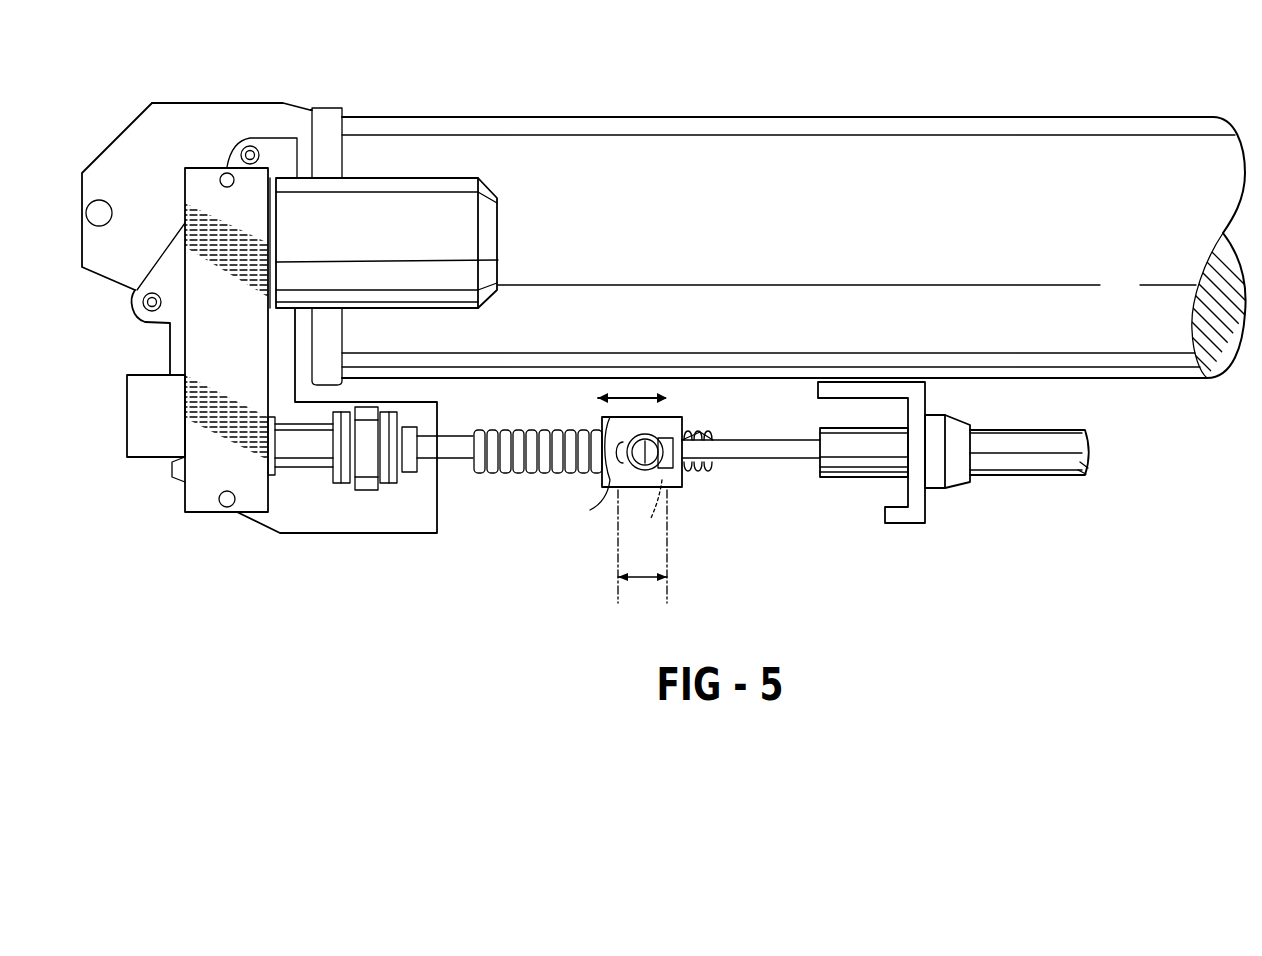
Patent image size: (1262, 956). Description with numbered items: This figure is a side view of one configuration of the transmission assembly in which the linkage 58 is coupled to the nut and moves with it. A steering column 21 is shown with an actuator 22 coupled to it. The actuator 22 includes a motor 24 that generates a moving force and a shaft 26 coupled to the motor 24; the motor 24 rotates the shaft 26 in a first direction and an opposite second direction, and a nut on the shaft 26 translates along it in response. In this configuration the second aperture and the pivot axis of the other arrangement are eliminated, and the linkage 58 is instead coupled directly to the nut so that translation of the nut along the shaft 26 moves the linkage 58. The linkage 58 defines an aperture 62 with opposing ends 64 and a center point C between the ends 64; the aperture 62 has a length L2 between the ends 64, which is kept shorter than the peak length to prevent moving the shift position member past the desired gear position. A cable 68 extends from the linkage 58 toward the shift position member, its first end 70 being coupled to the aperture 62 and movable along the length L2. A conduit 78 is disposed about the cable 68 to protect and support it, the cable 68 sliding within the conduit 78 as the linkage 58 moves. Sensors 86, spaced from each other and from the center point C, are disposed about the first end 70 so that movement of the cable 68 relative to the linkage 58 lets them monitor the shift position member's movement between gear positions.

The steering column 21 is at (908, 122).
The actuator 22 is at (258, 556).
The motor 24 is at (487, 217).
The shaft 26 is at (512, 474).
The linkage 58 is at (668, 428).
The aperture 62 is at (613, 427).
The opposing ends 64 is at (700, 432).
The cable 68 is at (795, 455).
The first end 70 is at (718, 445).
The conduit 78 is at (1022, 458).
The sensors 86 is at (623, 477).
The center point C is at (655, 440).
The length L2 is at (647, 583).